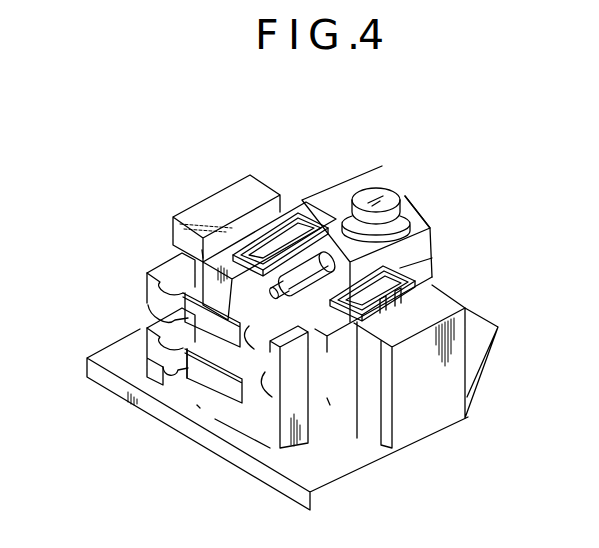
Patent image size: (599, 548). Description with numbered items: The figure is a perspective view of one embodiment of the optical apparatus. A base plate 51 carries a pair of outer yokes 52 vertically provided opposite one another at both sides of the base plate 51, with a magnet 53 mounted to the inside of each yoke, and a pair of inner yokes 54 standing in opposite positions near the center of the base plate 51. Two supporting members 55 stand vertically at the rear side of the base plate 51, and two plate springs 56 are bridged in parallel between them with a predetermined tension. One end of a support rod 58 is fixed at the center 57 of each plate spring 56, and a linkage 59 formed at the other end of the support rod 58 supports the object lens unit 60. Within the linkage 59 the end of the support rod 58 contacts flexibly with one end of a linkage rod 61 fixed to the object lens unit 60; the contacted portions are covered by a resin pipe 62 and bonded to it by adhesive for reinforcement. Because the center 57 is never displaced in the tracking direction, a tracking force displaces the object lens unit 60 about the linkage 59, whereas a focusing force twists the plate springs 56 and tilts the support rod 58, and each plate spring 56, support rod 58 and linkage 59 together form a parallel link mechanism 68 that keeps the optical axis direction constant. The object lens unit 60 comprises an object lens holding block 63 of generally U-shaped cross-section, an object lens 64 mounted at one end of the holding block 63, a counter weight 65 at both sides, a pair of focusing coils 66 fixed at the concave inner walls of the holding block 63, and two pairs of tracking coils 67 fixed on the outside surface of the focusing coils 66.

The base plate 51 is at (400, 455).
The outer yoke 52 is at (173, 232).
The magnet 53 is at (275, 190).
The inner yoke 54 is at (316, 257).
The supporting member 55 is at (155, 338).
The plate spring 56 is at (152, 290).
The center of the plate spring 57 is at (218, 407).
The support rod 58 is at (170, 270).
The linkage 59 is at (306, 201).
The object lens unit 60 is at (424, 219).
The linkage rod 61 is at (381, 244).
The resin pipe 62 is at (302, 262).
The object lens holding block 63 is at (400, 268).
The object lens 64 is at (394, 198).
The counter weight 65 is at (202, 250).
The focusing coil 66 is at (303, 203).
The tracking coil 67 is at (262, 232).
The parallel link mechanism 68 is at (199, 403).